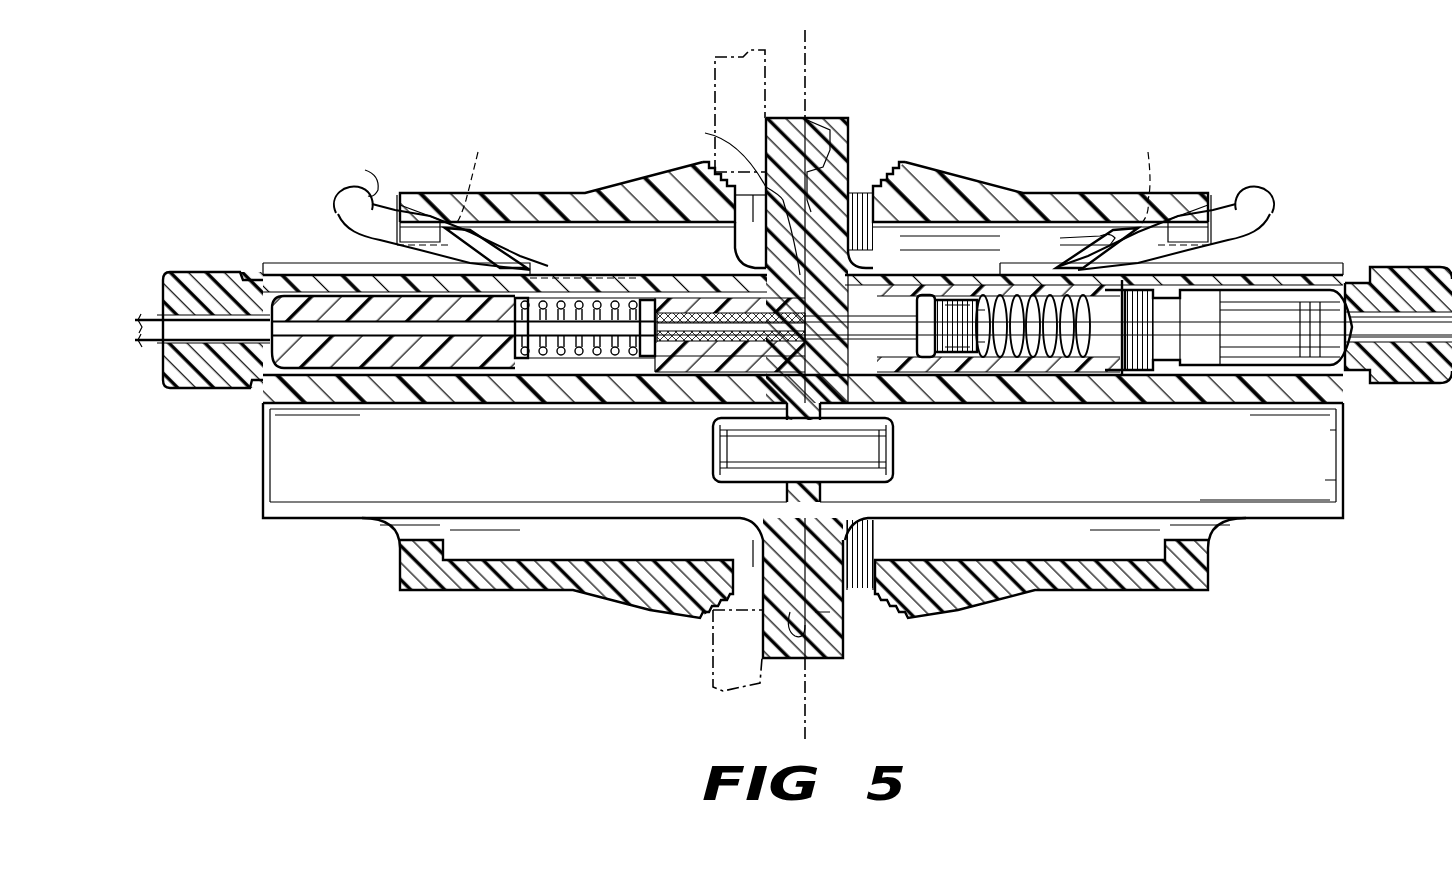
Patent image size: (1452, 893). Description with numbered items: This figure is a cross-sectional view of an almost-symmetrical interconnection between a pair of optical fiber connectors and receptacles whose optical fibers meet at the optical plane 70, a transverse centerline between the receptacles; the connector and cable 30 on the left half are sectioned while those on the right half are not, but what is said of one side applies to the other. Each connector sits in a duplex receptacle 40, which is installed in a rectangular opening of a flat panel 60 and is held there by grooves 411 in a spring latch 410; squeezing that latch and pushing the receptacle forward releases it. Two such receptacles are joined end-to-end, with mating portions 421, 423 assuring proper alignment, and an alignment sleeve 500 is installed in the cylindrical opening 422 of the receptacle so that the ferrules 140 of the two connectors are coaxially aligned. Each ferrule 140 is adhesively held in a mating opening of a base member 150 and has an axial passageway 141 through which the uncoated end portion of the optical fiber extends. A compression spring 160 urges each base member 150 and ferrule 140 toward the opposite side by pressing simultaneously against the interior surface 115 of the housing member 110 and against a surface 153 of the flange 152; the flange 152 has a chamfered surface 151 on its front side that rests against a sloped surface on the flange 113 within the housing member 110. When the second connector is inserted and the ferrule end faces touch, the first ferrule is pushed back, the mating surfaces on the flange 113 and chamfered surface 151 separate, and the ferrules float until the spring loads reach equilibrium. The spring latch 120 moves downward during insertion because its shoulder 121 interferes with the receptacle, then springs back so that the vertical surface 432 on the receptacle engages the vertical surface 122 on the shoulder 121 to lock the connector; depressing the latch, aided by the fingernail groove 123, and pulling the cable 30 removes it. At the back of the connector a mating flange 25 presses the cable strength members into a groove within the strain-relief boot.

The mating flange 25 is at (450, 370).
The cable 30 is at (1402, 284).
The duplex receptacle 40 is at (462, 598).
The flat panel 60 is at (724, 634).
The optical plane 70 is at (808, 86).
The housing member 110 is at (418, 368).
The flange 113 is at (663, 300).
The interior surface 115 is at (513, 300).
The spring latch 120 is at (334, 200).
The shoulder 121 is at (1075, 240).
The vertical surface 122 is at (408, 186).
The fingernail groove 123 is at (368, 182).
The ferrule 140 is at (858, 314).
The axial passageway 141 is at (728, 193).
The base member 150 is at (652, 370).
The chamfered surface 151 is at (696, 384).
The flange 152 is at (704, 362).
The surface 153 is at (585, 380).
The compression spring 160 is at (553, 376).
The spring latch 410 is at (958, 172).
The grooves 411 is at (882, 185).
The mating portion 421 is at (797, 634).
The cylindrical opening 422 is at (748, 288).
The mating portion 423 is at (810, 618).
The vertical surface 432 is at (820, 170).
The alignment sleeve 500 is at (882, 392).